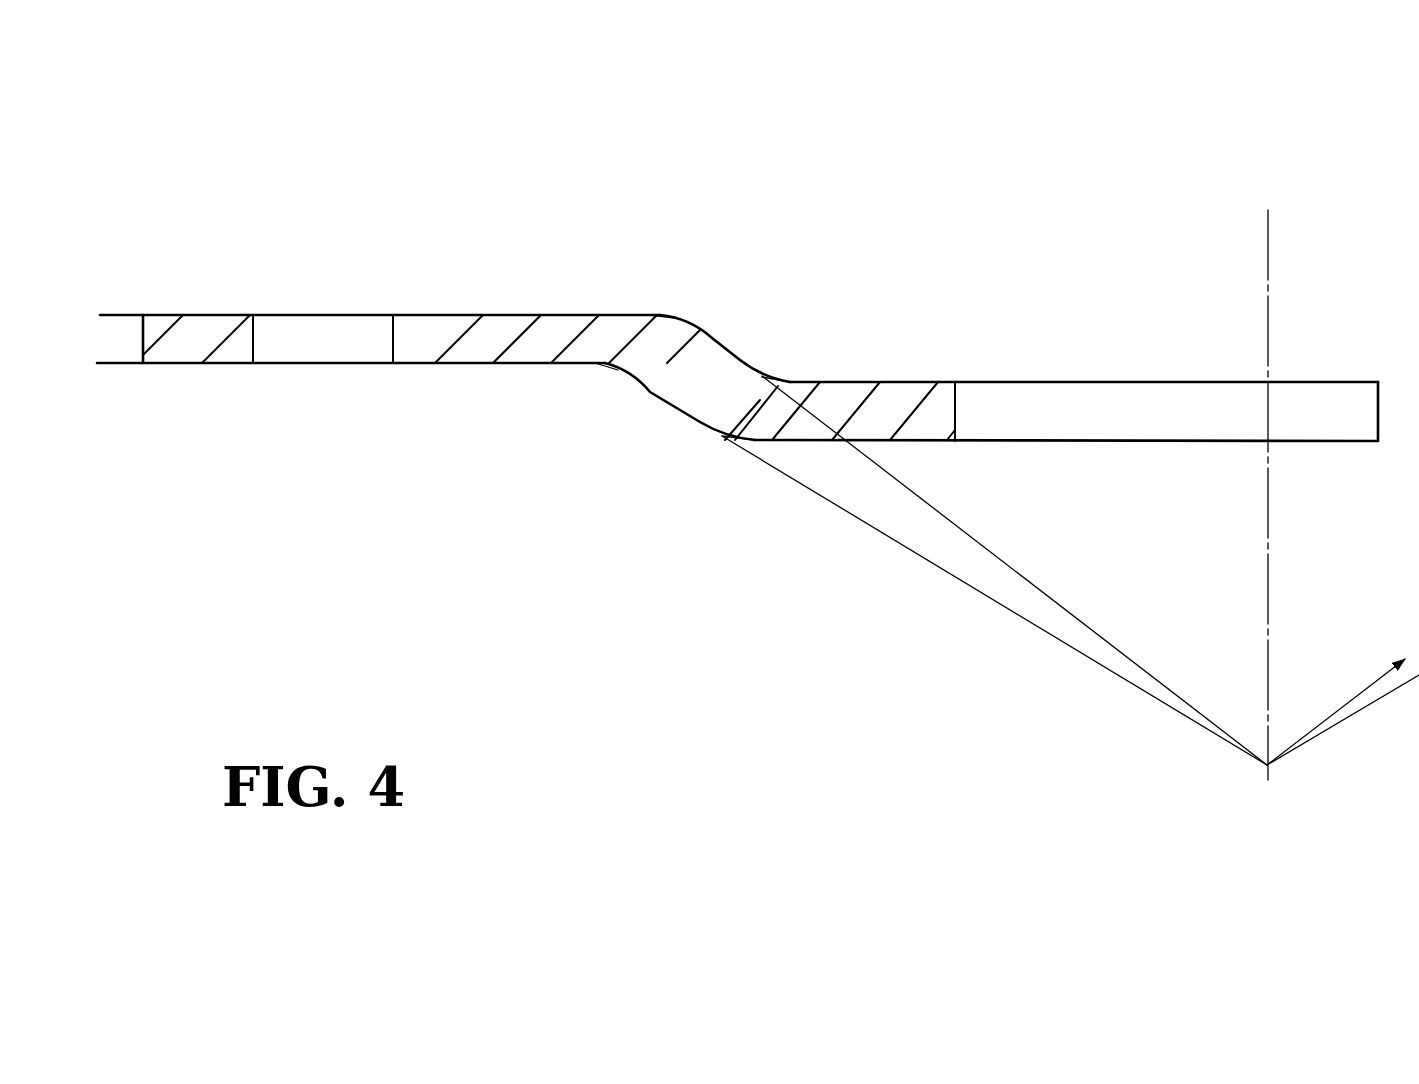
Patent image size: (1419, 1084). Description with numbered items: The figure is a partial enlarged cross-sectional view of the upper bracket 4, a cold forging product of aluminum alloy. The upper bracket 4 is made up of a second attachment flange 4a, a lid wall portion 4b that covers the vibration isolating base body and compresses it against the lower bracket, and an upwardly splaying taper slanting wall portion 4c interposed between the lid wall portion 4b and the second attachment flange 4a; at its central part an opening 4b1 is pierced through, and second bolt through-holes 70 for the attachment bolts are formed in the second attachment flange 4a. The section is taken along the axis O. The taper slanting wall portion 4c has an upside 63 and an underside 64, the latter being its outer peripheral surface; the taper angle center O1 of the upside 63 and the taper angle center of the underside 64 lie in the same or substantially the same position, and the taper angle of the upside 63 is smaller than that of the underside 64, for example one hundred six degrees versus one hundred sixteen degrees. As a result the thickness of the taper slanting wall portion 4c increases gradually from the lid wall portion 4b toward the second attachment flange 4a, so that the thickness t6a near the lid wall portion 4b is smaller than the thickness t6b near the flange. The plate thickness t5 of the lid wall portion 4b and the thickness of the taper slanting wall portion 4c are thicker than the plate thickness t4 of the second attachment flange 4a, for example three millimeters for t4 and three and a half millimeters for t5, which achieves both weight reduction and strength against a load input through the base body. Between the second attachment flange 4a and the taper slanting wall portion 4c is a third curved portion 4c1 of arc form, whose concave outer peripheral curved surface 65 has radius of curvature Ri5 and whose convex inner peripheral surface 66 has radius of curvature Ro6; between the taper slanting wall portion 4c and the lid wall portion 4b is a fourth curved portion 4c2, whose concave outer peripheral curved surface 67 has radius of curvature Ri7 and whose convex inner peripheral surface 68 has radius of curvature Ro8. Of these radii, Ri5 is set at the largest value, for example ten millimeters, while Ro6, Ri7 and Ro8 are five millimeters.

The upper bracket 4 is at (1171, 246).
The second attachment flange 4a is at (504, 330).
The lid wall portion 4b is at (905, 383).
The opening 4b1 is at (955, 420).
The taper slanting wall portion 4c is at (690, 418).
The third curved portion 4c1 is at (650, 347).
The fourth curved portion 4c2 is at (755, 418).
The upside 63 is at (690, 385).
The underside 64 is at (662, 398).
The outer peripheral curved surface 65 is at (602, 365).
The inner peripheral surface 66 is at (662, 317).
The outer peripheral curved surface 67 is at (770, 378).
The inner peripheral surface 68 is at (733, 441).
The second bolt through-holes 70 is at (393, 363).
The radius of curvature of inner peripheral surface Ro6 is at (661, 352).
The radius of curvature of outer peripheral curved surface Ri5 is at (608, 368).
The radius of curvature of outer peripheral curved surface Ri7 is at (745, 398).
The radius of curvature of inner peripheral surface Ro8 is at (712, 436).
The plate thickness of second attachment flange t4 is at (111, 315).
The plate thickness of lid wall portion t5 is at (1167, 470).
The plate thickness of taper slanting wall portion t6a is at (700, 452).
The plate thickness of taper slanting wall portion t6b is at (625, 450).
The center axis O is at (1268, 287).
The taper angle center O1 is at (1070, 603).